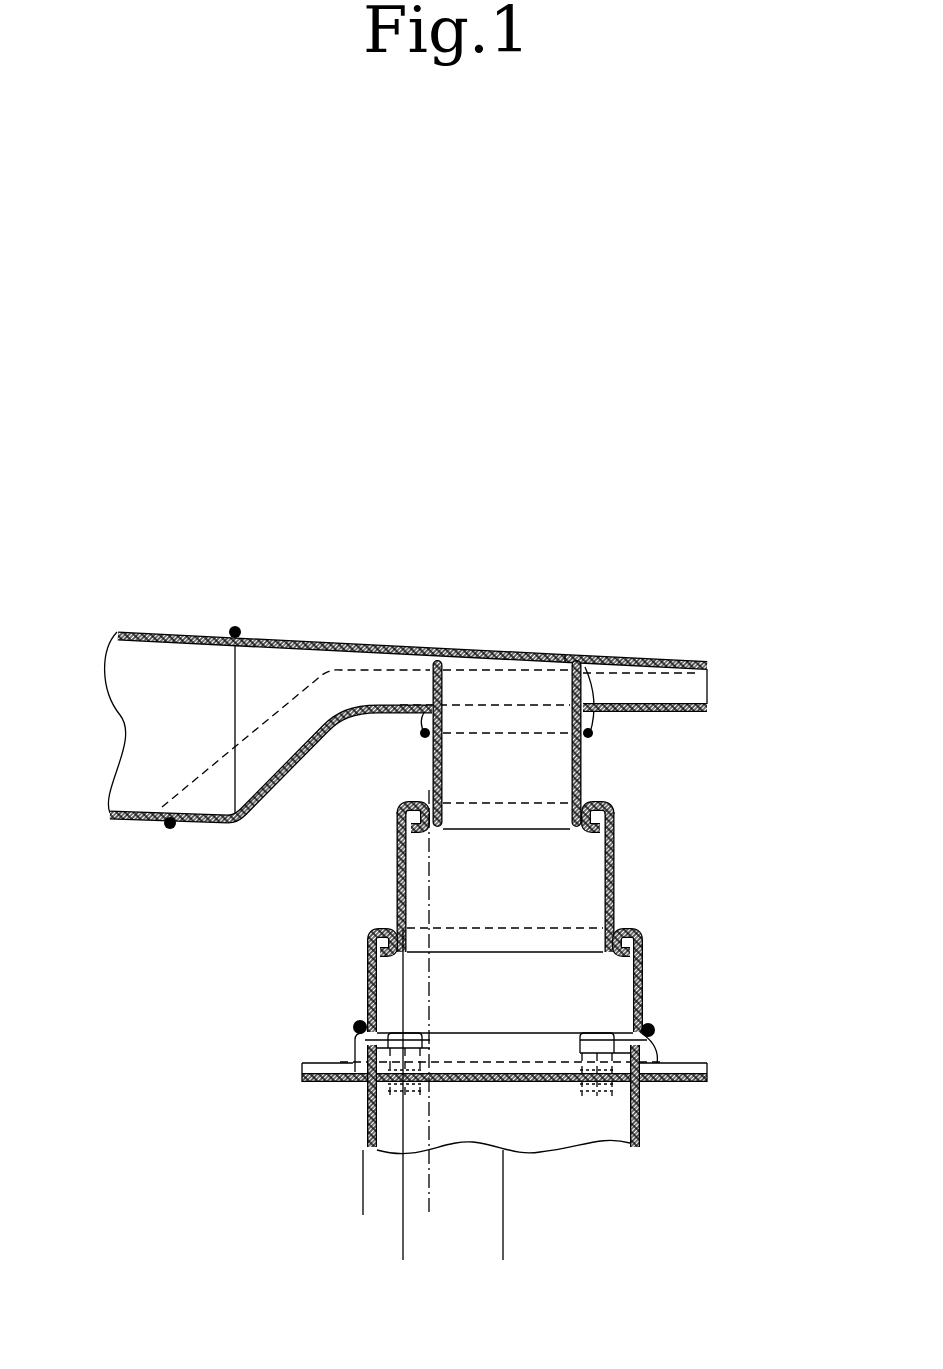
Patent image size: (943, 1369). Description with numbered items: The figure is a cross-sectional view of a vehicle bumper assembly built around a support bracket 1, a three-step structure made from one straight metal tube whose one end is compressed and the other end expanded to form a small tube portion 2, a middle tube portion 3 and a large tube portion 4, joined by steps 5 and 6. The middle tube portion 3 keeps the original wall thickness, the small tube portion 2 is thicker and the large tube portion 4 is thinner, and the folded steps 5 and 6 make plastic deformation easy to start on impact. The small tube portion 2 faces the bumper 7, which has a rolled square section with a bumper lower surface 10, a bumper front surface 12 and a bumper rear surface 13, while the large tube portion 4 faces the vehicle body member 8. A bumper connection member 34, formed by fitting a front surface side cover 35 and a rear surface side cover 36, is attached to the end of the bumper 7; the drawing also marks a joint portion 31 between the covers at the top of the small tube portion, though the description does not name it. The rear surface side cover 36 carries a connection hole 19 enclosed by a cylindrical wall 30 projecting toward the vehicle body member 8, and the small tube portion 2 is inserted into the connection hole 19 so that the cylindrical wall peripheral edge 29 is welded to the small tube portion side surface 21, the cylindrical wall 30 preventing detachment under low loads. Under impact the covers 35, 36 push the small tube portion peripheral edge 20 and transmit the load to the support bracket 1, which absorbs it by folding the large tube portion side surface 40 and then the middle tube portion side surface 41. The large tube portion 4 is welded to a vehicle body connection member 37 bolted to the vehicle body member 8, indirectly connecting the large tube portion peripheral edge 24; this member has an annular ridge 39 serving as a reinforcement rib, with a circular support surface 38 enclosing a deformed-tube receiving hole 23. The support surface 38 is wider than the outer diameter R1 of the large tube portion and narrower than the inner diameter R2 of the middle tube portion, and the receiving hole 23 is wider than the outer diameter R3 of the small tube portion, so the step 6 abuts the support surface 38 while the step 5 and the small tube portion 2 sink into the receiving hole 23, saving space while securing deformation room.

The support bracket 1 is at (632, 888).
The small tube portion 2 is at (540, 770).
The middle tube portion 3 is at (397, 874).
The large tube portion 4 is at (575, 998).
The step 5 is at (615, 818).
The step 6 is at (372, 932).
The bumper 7 is at (149, 660).
The vehicle body member 8 is at (666, 1091).
The bumper lower surface 10 is at (160, 731).
The bumper front surface 12 is at (183, 640).
The bumper rear surface 13 is at (150, 829).
The connection hole 19 is at (462, 733).
The small tube portion peripheral edge 20 is at (497, 661).
The small tube portion side surface 21 is at (590, 700).
The deformed-tube receiving hole 23 is at (583, 1033).
The large tube portion peripheral edge 24 is at (358, 1025).
The cylindrical wall peripheral edge 29 is at (422, 740).
The cylindrical wall 30 is at (590, 723).
The joint 31 is at (565, 658).
The bumper connection member 34 is at (668, 649).
The front surface side cover 35 is at (307, 641).
The rear surface side cover 36 is at (256, 801).
The vehicle body connection member 37 is at (548, 1076).
The support surface 38 is at (352, 1263).
The annular ridge 39 is at (350, 1048).
The large tube portion side surface 40 is at (366, 983).
The middle tube portion side surface 41 is at (616, 850).
The outer diameter of the large tube portion R1 is at (363, 1199).
The inner diameter of the middle tube portion R2 is at (403, 1183).
The outer diameter of the small tube portion R3 is at (429, 1168).